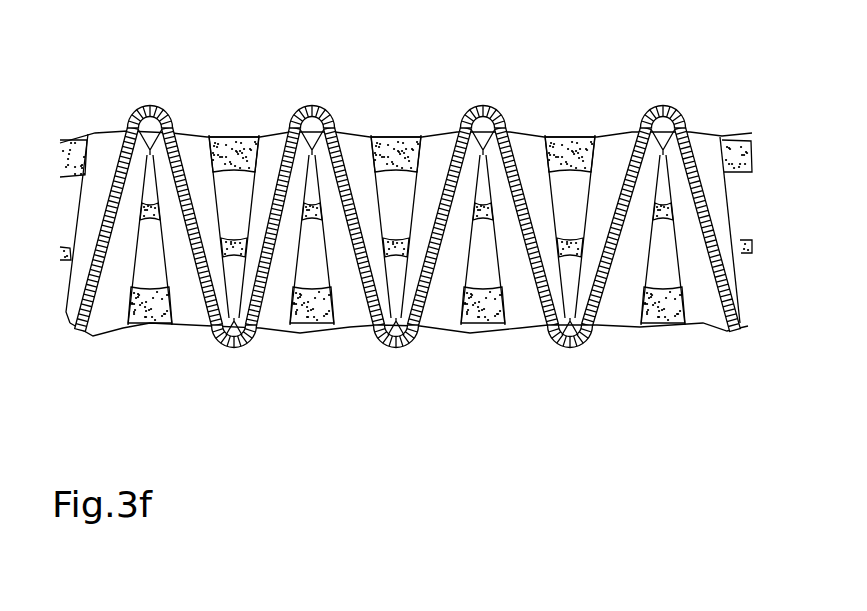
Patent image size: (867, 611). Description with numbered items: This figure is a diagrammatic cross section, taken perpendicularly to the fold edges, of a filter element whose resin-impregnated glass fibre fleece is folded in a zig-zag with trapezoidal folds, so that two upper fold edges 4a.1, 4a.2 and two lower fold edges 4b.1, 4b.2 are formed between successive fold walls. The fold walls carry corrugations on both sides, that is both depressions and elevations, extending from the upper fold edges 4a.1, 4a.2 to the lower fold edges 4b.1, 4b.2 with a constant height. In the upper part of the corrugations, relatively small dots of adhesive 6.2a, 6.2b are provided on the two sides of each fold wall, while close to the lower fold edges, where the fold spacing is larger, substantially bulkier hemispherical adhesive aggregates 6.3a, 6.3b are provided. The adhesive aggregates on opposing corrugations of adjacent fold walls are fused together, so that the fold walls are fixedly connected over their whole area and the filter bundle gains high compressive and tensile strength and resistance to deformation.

The upper fold edge 4a.1 is at (296, 114).
The upper fold edge 4a.2 is at (329, 114).
The lower fold edge 4b.1 is at (377, 342).
The lower fold edge 4b.2 is at (417, 339).
The dot of adhesive 6.2a is at (141, 106).
The dot of adhesive 6.2b is at (213, 336).
The hemispherical adhesive aggregate 6.3a is at (148, 327).
The hemispherical adhesive aggregate 6.3b is at (240, 133).